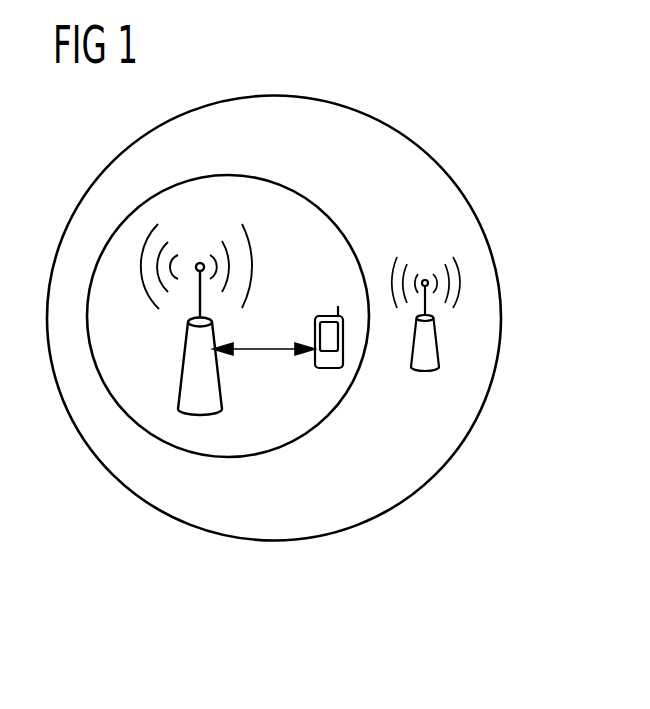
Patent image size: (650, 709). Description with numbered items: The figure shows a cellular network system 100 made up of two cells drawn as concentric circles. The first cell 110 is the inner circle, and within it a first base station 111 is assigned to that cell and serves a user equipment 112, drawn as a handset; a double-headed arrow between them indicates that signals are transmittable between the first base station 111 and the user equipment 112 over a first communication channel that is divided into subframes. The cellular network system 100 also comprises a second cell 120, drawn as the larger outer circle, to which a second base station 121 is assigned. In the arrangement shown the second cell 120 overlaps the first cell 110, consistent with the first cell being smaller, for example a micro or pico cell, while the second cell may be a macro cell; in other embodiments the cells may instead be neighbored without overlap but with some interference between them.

The cellular network system 100 is at (430, 118).
The first cell 110 is at (230, 457).
The first base station 111 is at (187, 360).
The user equipment 112 is at (325, 315).
The second cell 120 is at (287, 542).
The second base station 121 is at (427, 373).